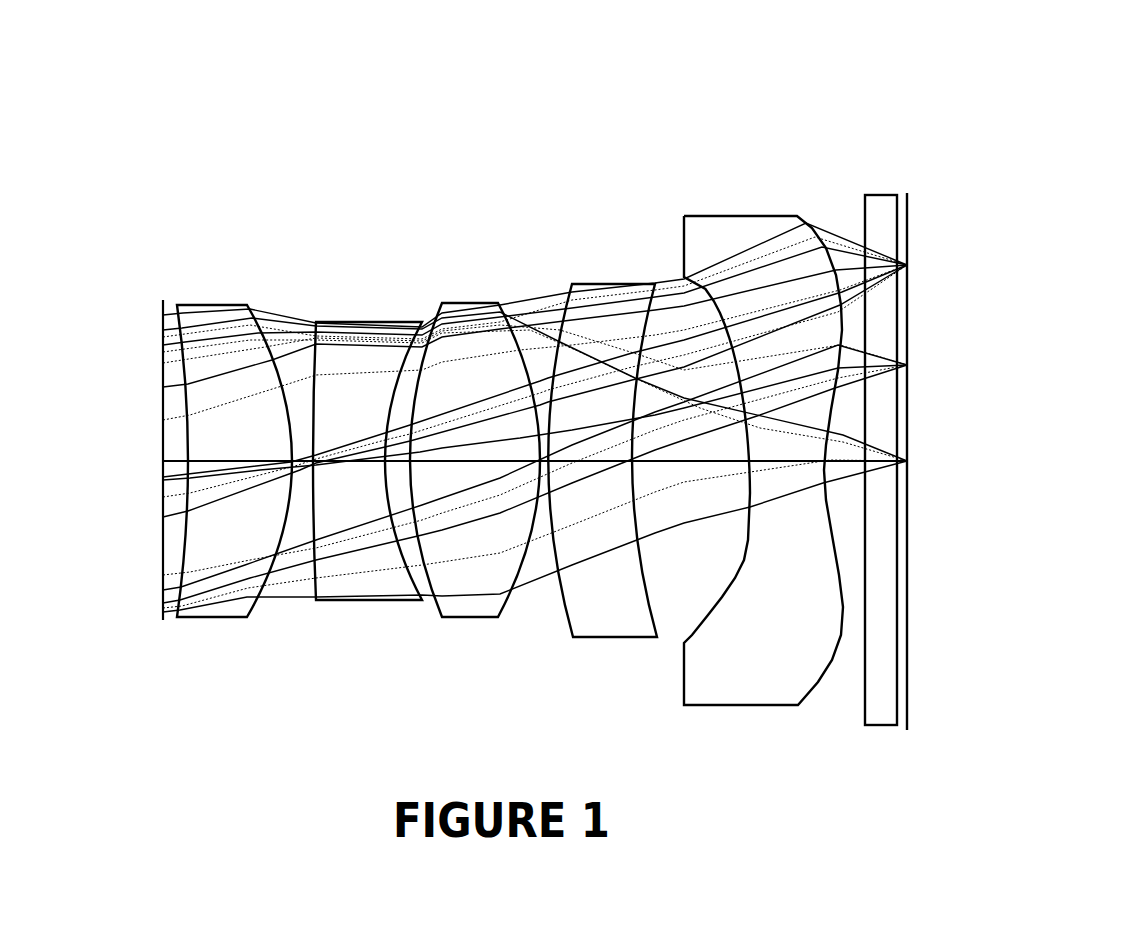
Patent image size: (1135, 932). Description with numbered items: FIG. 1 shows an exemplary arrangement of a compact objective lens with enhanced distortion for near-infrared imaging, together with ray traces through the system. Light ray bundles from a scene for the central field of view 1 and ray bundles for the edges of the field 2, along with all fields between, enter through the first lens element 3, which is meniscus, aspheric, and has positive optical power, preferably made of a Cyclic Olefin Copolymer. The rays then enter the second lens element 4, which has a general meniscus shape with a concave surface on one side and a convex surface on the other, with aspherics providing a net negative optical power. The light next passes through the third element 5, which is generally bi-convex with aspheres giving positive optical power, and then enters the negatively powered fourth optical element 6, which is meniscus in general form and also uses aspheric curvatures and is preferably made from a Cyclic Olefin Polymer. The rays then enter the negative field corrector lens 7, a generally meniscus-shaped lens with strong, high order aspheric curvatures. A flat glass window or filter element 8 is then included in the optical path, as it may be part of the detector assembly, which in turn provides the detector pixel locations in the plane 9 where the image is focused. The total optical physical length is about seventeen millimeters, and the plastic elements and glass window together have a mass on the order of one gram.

The central field of view 1 is at (287, 605).
The edges of the field 2 is at (197, 405).
The first lens element 3 is at (192, 302).
The second lens element 4 is at (343, 322).
The third element 5 is at (468, 303).
The fourth optical element 6 is at (592, 283).
The negative field corrector lens 7 is at (760, 215).
The flat glass window or filter element 8 is at (882, 198).
The plane 9 is at (910, 252).